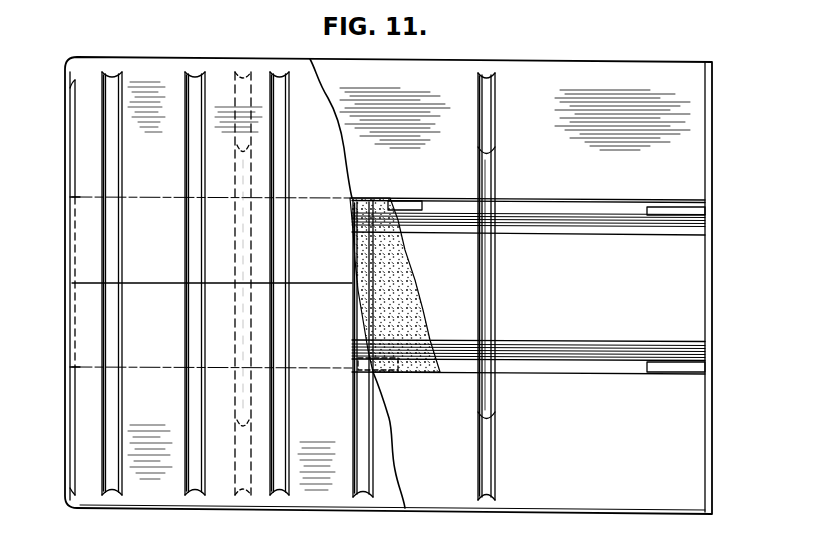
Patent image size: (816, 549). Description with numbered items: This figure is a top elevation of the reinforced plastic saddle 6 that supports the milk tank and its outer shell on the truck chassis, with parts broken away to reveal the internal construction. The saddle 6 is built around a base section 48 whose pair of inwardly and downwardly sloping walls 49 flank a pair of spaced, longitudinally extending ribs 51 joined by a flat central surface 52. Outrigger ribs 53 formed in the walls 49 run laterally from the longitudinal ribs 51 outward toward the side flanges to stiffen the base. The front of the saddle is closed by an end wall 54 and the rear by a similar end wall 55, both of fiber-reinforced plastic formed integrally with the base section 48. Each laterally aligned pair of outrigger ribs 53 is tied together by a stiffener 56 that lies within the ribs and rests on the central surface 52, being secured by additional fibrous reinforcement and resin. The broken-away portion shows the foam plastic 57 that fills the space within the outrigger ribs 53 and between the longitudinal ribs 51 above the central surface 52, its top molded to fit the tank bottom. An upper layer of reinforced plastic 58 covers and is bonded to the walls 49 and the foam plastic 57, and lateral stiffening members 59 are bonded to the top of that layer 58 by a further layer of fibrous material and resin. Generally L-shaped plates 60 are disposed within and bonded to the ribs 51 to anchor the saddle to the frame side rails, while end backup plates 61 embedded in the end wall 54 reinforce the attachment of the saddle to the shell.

The saddle 6 is at (556, 511).
The base section 48 is at (697, 231).
The sloping walls 49 is at (576, 170).
The longitudinally extending ribs 51 is at (595, 229).
The central surface 52 is at (592, 298).
The outrigger ribs 53 is at (250, 446).
The end wall 54 is at (66, 321).
The end wall 55 is at (710, 292).
The stiffener 56 is at (250, 343).
The foam plastic 57 is at (416, 283).
The upper layer of reinforced plastic 58 is at (391, 444).
The stiffening members 59 is at (185, 413).
The L-shaped plates 60 is at (412, 208).
The end backup plates 61 is at (73, 132).